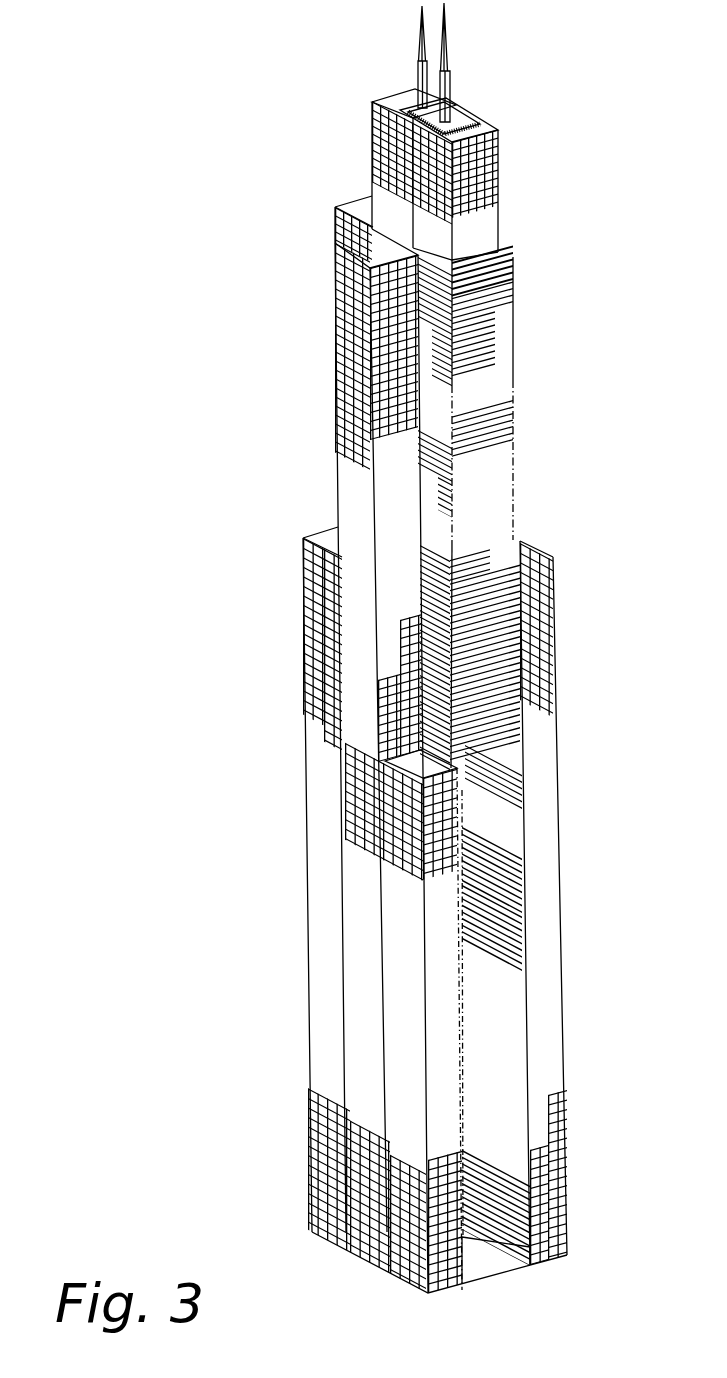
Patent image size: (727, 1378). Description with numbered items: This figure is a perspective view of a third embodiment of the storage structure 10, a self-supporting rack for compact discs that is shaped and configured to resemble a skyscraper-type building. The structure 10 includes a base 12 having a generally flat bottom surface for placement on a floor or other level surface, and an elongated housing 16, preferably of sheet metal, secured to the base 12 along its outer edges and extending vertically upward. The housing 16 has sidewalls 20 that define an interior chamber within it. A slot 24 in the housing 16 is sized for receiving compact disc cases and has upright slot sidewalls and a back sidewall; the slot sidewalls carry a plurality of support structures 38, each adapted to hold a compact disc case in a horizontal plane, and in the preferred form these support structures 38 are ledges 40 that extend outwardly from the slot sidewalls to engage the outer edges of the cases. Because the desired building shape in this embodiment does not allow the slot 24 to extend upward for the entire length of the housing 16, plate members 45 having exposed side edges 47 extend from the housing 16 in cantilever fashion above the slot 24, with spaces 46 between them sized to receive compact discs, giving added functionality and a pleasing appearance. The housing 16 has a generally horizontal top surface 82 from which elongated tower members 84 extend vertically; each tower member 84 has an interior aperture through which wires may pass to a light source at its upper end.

The storage structure 10 is at (437, 661).
The base 12 is at (490, 1257).
The housing 16 is at (352, 493).
The sidewalls 20 is at (540, 751).
The slot 24 is at (494, 828).
The support structures 38 is at (525, 956).
The ledges 40 is at (522, 886).
The plate members 45 is at (508, 277).
The spaces 46 is at (518, 434).
The exposed side edges 47 is at (427, 318).
The top surface 82 is at (472, 127).
The tower members 84 is at (420, 44).